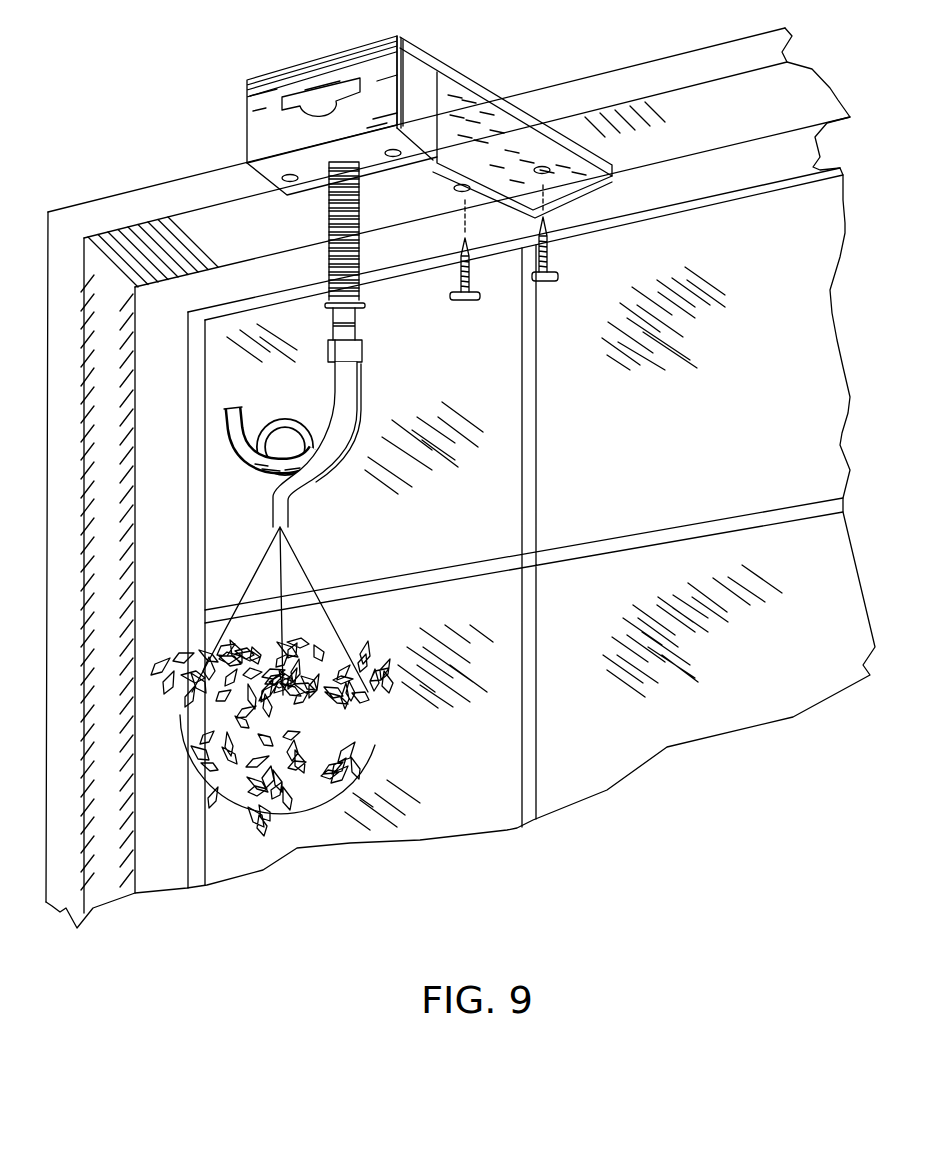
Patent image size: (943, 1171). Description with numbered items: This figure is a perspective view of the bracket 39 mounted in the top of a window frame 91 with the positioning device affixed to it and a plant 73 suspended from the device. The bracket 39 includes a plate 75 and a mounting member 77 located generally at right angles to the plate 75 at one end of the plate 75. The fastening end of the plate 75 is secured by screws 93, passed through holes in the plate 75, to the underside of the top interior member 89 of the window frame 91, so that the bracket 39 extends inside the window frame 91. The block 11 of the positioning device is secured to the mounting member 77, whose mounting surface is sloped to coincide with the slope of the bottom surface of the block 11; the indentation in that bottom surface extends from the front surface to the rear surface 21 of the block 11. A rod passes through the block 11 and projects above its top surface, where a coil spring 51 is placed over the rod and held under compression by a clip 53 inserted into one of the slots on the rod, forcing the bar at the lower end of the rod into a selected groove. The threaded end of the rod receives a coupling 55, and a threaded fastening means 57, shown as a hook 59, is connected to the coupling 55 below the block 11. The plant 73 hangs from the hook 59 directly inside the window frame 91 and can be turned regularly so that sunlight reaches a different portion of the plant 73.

The block 11 is at (247, 130).
The rear surface 21 is at (245, 147).
The bracket 39 is at (458, 78).
The spring 51 is at (360, 241).
The clip 53 is at (366, 306).
The coupling 55 is at (364, 327).
The fastening means 57 is at (322, 466).
The hook 59 is at (235, 405).
The plant 73 is at (390, 766).
The plate 75 is at (462, 100).
The mounting member 77 is at (410, 112).
The top interior member 89 is at (677, 118).
The window frame 91 is at (92, 502).
The screws 93 is at (553, 282).